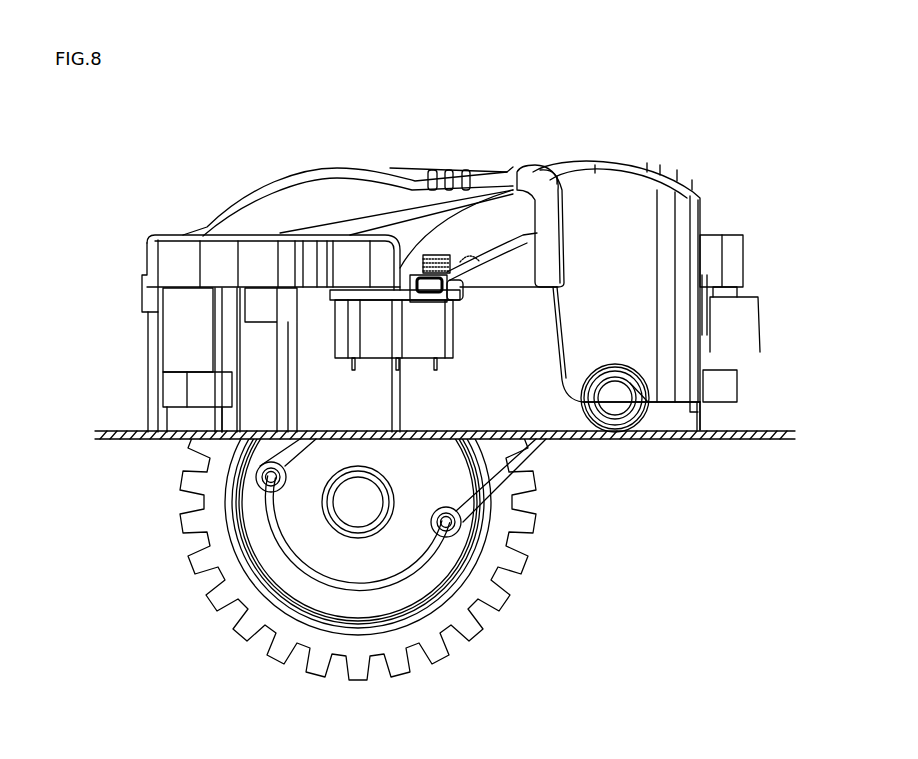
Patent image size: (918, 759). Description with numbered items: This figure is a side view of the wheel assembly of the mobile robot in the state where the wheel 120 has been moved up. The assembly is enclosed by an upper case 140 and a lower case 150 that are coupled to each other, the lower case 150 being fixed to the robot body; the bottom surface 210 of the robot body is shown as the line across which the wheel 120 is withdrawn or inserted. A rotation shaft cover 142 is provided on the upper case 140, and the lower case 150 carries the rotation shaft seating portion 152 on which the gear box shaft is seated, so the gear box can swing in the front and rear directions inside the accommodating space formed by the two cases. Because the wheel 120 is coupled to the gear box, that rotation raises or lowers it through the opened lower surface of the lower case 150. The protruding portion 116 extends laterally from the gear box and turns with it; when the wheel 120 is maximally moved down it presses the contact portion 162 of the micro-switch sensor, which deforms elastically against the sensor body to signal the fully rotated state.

The protruding portion 116 is at (410, 275).
The wheel 120 is at (253, 605).
The upper case 140 is at (610, 202).
The rotation shaft cover 142 is at (640, 385).
The lower case 150 is at (517, 380).
The rotation shaft seating portion 152 is at (630, 383).
The contact portion 162 is at (386, 286).
The bottom surface 210 is at (108, 440).